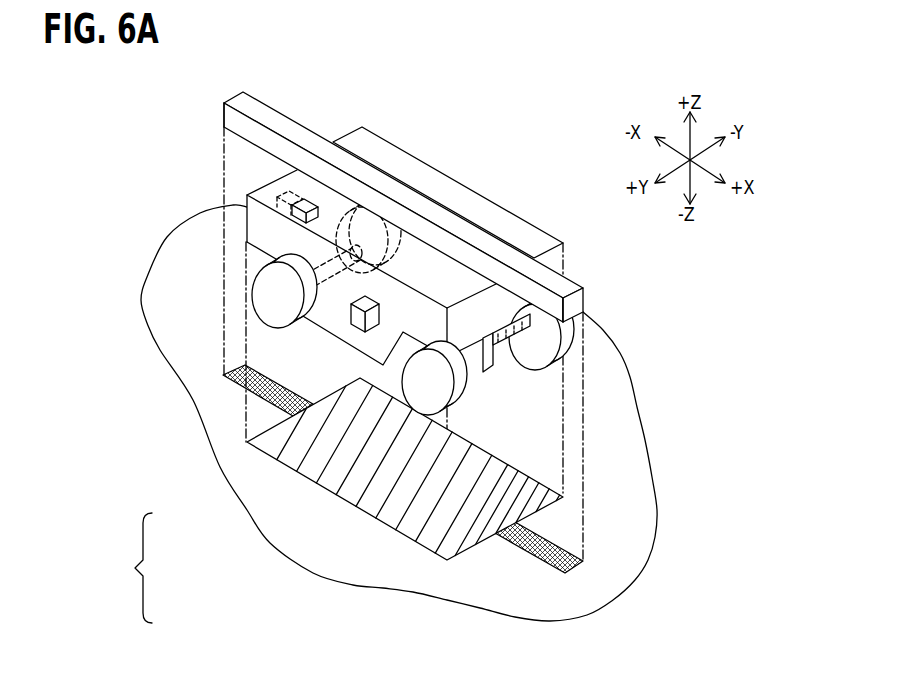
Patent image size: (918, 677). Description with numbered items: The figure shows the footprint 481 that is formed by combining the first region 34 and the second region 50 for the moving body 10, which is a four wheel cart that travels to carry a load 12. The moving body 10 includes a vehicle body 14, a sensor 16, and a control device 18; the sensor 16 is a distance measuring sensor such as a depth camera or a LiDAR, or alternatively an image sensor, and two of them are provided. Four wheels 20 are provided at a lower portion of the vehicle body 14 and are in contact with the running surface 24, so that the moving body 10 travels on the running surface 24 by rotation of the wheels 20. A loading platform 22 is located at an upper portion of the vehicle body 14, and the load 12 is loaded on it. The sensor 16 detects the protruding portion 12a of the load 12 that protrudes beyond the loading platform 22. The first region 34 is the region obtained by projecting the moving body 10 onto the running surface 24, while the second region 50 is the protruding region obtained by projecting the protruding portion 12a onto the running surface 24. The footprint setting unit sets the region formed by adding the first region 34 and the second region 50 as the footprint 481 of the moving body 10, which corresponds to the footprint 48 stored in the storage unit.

The moving body 10 is at (250, 178).
The load 12 is at (412, 183).
The protruding portion 12a is at (240, 101).
The vehicle body 14 is at (260, 235).
The sensor 16 is at (278, 200).
The control device 18 is at (381, 317).
The wheel 20 is at (400, 258).
The loading platform 22 is at (397, 154).
The running surface 24 is at (168, 265).
The first region 34 is at (370, 500).
The footprint 48 is at (111, 572).
The footprint 481 is at (103, 568).
The second region 50 is at (232, 378).